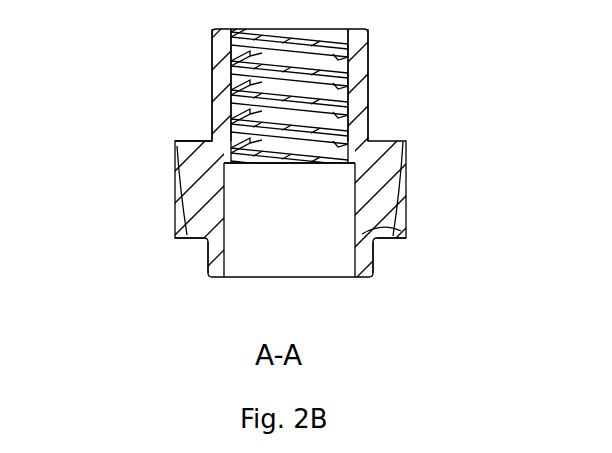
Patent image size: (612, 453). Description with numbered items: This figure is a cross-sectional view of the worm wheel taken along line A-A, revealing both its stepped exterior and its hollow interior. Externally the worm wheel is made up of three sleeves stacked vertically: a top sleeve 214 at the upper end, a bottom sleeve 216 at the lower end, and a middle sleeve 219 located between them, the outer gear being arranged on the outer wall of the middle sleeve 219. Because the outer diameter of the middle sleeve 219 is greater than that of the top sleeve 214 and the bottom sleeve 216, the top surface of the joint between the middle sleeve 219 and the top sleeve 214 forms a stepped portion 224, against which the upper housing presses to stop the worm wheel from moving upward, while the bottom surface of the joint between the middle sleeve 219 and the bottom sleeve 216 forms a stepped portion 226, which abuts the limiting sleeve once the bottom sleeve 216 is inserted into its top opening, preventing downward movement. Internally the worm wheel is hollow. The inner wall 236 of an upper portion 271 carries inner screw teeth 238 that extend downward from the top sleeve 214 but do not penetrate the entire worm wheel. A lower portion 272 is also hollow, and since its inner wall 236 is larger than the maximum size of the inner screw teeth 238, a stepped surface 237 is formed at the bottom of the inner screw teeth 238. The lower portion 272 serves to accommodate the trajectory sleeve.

The top sleeve 214 is at (214, 57).
The stepped portion 224 is at (185, 139).
The middle sleeve 219 is at (187, 185).
The stepped portion 226 is at (201, 240).
The bottom sleeve 216 is at (207, 257).
The inner screw teeth 238 is at (358, 46).
The upper portion 271 is at (350, 100).
The stepped surface 237 is at (358, 150).
The inner wall 236 is at (360, 210).
The lower portion 272 is at (405, 238).